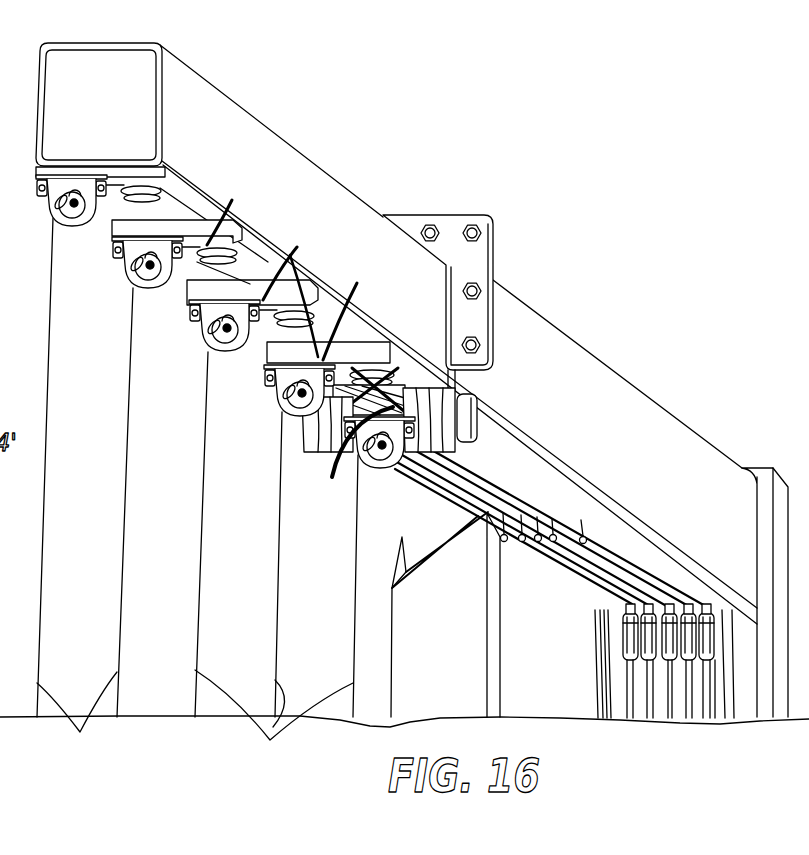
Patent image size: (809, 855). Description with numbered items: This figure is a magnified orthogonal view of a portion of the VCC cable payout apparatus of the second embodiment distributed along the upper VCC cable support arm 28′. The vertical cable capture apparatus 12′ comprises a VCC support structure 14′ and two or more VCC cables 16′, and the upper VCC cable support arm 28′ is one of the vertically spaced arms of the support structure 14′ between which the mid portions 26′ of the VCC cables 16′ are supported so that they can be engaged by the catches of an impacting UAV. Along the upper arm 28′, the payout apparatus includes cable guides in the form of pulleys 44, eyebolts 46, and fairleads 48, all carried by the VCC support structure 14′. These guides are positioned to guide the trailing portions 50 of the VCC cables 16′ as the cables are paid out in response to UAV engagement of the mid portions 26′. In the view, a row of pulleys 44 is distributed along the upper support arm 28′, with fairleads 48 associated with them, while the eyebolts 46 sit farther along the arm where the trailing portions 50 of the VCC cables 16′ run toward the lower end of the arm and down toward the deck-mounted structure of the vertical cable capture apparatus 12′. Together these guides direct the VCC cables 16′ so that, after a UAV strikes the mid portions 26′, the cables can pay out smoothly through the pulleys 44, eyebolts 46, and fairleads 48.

The pulleys 44 is at (156, 186).
The fairleads 48 is at (208, 242).
The upper VCC cable support arm 28′ is at (573, 385).
The eyebolts 46 is at (581, 520).
The trailing portions 50 is at (643, 603).
The VCC cables 16′ is at (195, 495).
The mid portions 26′ is at (302, 614).
The vertical cable capture apparatus 12′ is at (790, 683).
The VCC support structure 14′ is at (784, 619).